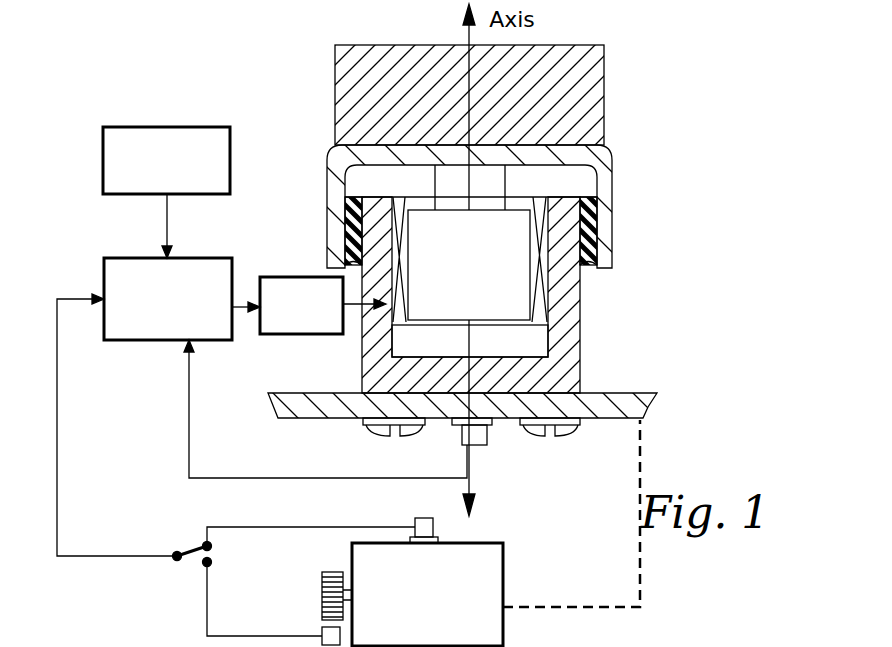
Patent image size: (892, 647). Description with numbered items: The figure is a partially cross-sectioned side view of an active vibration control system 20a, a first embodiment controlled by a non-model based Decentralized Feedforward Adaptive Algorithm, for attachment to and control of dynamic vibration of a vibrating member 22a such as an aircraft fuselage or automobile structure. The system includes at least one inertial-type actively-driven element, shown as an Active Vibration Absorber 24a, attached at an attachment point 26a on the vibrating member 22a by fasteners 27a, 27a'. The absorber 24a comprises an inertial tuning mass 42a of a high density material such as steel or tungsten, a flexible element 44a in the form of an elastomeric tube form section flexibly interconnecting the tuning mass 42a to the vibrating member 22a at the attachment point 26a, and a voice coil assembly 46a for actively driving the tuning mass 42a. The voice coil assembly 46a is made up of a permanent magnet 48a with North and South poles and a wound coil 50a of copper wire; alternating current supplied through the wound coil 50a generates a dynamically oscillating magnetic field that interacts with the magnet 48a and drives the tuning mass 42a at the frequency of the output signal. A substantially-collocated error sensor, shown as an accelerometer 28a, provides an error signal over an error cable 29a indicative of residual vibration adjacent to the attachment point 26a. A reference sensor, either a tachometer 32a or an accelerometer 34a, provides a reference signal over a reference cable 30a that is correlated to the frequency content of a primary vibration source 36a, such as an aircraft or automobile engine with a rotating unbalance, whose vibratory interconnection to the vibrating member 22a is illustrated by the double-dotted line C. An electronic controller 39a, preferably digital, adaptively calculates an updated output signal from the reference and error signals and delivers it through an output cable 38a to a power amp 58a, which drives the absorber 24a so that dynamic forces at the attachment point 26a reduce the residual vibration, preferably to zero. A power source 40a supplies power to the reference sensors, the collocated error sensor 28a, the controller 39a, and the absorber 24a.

The active vibration control system 20a is at (617, 121).
The vibrating member 22a is at (608, 393).
The Active Vibration Absorber (AVA) 24a is at (582, 305).
The attachment point 26a is at (478, 395).
The fastener 27a is at (406, 448).
The fastener 27a' is at (573, 460).
The accelerometer (collocated error sensor) 28a is at (486, 445).
The error cable 29a is at (190, 428).
The reference cable 30a is at (57, 358).
The tachometer 32a is at (322, 629).
The accelerometer (reference sensor) 34a is at (433, 525).
The primary vibration source 36a is at (503, 618).
The output cable 38a is at (240, 311).
The electronic controller 39a is at (120, 257).
The power source 40a is at (157, 125).
The inertial tuning mass 42a is at (469, 95).
The flexible element 44a is at (600, 226).
The voice coil assembly 46a is at (597, 208).
The permanent magnet 48a is at (469, 265).
The wound coil 50a is at (397, 202).
The power amp 58a is at (310, 277).
The double-dotted line C is at (645, 573).